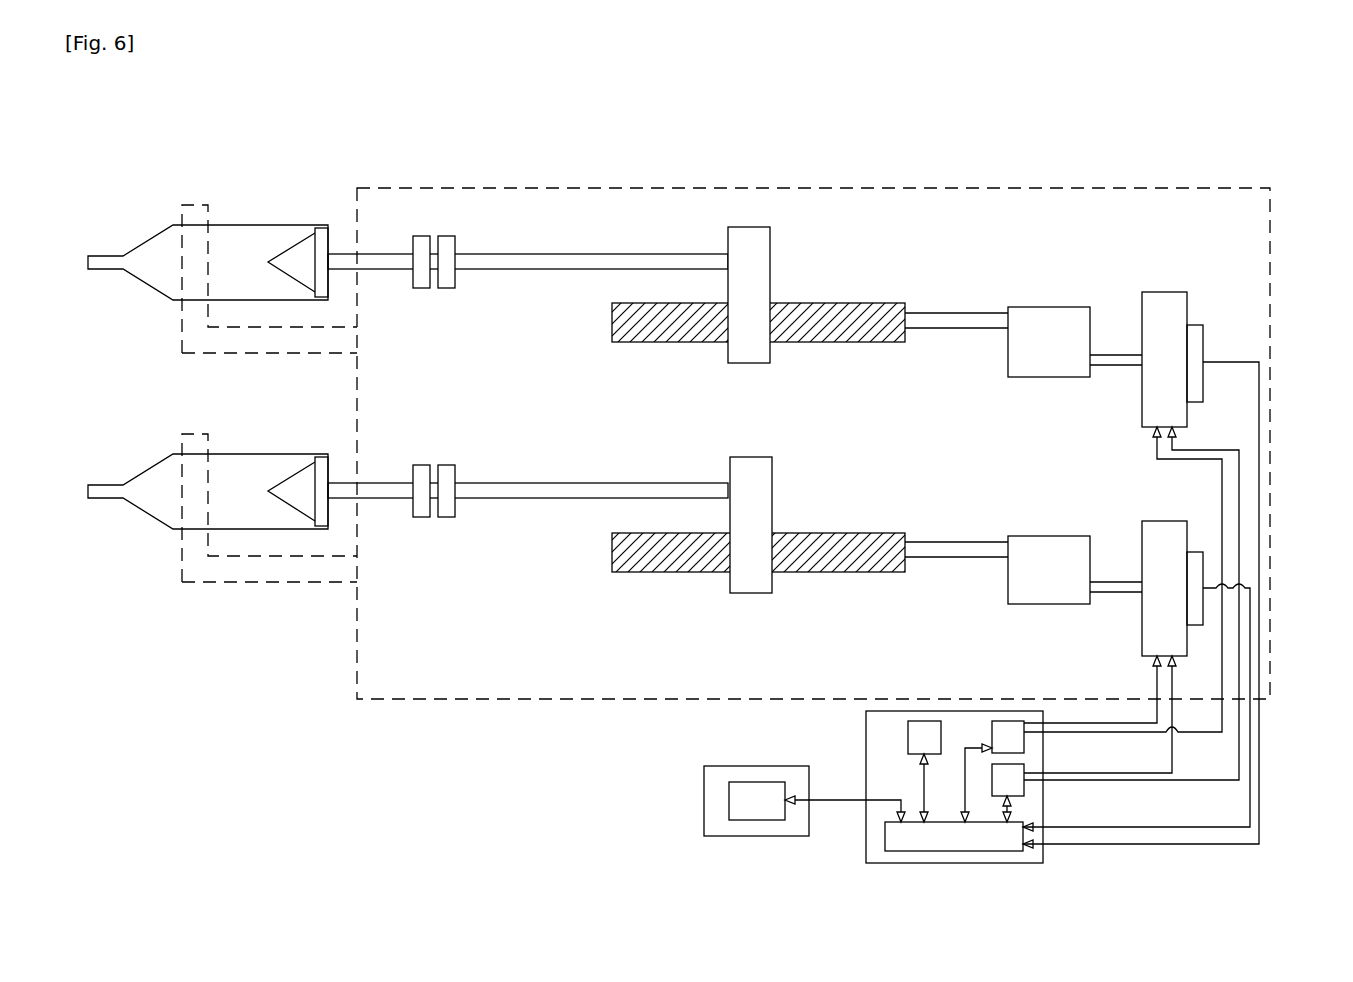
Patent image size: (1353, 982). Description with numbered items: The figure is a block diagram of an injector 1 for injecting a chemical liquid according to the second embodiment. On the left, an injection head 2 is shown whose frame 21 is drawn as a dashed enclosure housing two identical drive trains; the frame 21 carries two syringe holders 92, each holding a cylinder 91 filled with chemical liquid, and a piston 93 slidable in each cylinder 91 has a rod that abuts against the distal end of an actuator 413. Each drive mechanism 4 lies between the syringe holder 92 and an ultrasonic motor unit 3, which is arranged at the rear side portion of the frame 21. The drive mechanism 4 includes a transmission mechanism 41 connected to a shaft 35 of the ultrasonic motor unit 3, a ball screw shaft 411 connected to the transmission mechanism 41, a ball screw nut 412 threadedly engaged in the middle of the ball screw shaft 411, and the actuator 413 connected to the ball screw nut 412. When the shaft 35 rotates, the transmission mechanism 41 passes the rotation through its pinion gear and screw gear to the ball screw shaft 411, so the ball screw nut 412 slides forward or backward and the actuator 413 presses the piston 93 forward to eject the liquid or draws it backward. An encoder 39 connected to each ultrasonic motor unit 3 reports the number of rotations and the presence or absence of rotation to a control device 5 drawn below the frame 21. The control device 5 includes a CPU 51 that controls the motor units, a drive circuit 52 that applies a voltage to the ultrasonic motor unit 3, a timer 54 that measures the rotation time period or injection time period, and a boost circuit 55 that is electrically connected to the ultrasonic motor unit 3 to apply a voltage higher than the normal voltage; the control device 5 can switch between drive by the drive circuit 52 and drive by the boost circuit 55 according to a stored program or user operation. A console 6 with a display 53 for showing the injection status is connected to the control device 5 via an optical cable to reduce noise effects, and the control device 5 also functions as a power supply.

The injector 1 is at (530, 806).
The injection head 2 is at (336, 180).
The frame 21 is at (380, 705).
The ultrasonic motor unit 3 is at (1141, 534).
The shaft 35 is at (1123, 365).
The encoder 39 is at (1194, 325).
The drive mechanism 4 is at (616, 454).
The transmission mechanism 41 is at (1013, 352).
The ball screw shaft 411 is at (858, 342).
The ball screw nut 412 is at (763, 265).
The actuator 413 is at (527, 262).
The control device 5 is at (952, 757).
The CPU 51 is at (885, 850).
The drive circuit 52 is at (990, 730).
The display 53 is at (728, 800).
The timer 54 is at (907, 730).
The boost circuit 55 is at (1024, 790).
The console 6 is at (712, 786).
The cylinder 91 is at (98, 265).
The syringe holder 92 is at (300, 342).
The piston 93 is at (382, 268).